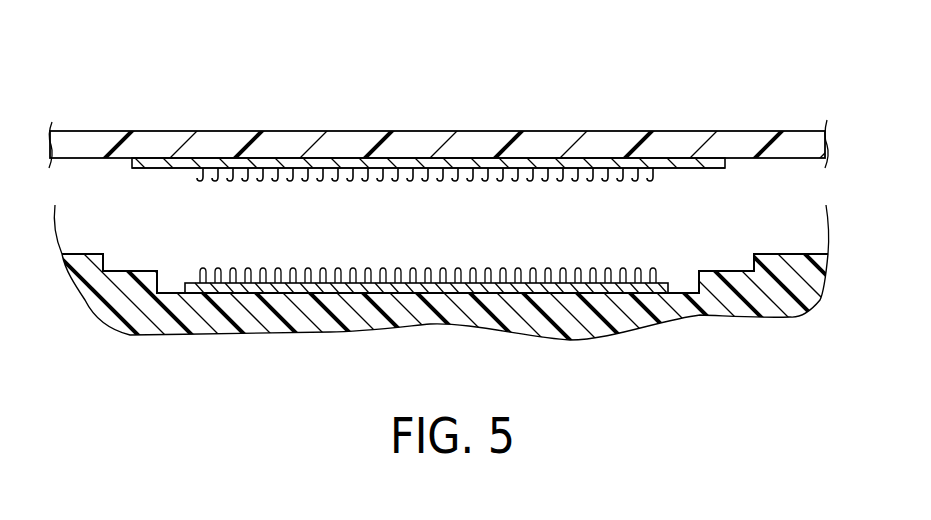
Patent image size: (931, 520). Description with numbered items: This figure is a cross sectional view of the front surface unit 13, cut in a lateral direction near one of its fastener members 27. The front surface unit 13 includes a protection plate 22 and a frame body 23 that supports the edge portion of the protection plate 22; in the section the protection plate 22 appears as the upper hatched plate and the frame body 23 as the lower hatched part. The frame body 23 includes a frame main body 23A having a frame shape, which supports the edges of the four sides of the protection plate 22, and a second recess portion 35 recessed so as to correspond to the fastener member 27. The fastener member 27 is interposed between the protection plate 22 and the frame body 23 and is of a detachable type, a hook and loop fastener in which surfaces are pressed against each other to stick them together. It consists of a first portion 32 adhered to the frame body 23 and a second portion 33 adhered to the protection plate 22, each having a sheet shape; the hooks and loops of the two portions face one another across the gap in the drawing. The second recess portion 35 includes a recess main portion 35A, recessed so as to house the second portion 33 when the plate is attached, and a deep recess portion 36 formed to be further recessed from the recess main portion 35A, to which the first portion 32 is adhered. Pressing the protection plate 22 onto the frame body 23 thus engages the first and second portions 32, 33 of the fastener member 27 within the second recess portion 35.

The front surface unit 13 is at (448, 93).
The protection plate 22 is at (798, 130).
The frame body 23 is at (780, 253).
The frame main body 23A is at (820, 272).
The fastener member 27 is at (737, 175).
The first portion 32 is at (440, 288).
The second portion 33 is at (525, 165).
The second recess portion 35 is at (118, 255).
The recess main portion 35A is at (175, 265).
The deep recess portion 36 is at (172, 290).